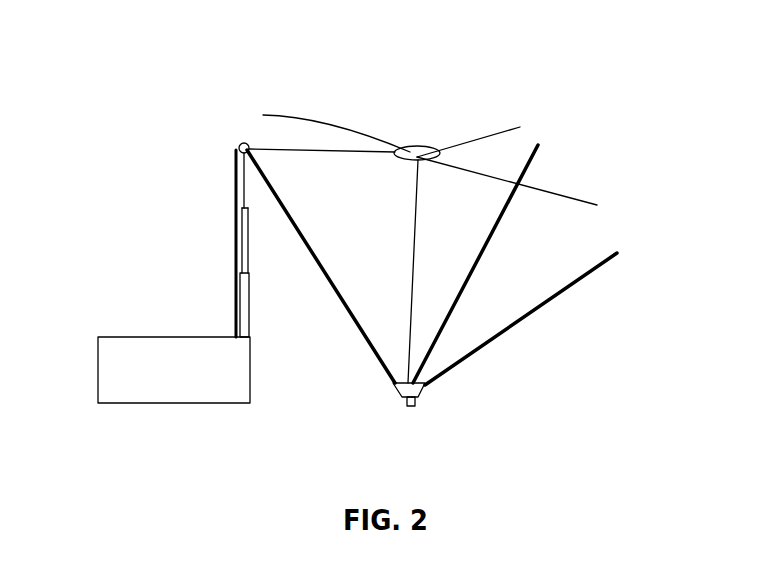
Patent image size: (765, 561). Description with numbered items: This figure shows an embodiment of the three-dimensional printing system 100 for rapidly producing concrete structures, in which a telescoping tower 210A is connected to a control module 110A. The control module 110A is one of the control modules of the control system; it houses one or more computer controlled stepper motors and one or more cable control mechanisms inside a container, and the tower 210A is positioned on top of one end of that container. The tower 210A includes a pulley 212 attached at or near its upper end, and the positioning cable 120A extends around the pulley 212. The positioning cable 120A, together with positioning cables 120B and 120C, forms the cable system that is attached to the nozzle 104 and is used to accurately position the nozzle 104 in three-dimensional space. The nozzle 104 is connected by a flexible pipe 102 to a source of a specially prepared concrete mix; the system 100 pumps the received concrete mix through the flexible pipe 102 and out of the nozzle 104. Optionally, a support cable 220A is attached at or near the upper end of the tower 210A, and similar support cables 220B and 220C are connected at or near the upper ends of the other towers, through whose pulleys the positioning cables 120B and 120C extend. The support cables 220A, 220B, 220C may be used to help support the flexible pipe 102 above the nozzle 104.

The 3D printing system 100 is at (134, 91).
The flexible pipe 102 is at (348, 127).
The nozzle 104 is at (394, 388).
The control module 110A is at (197, 378).
The positioning cable 120A is at (355, 322).
The positioning cable 120B is at (540, 160).
The positioning cable 120C is at (570, 288).
The telescoping tower 210A is at (243, 288).
The pulley 212 is at (239, 145).
The support cable 220A is at (383, 155).
The support cable 220B is at (500, 134).
The support cable 220C is at (590, 204).